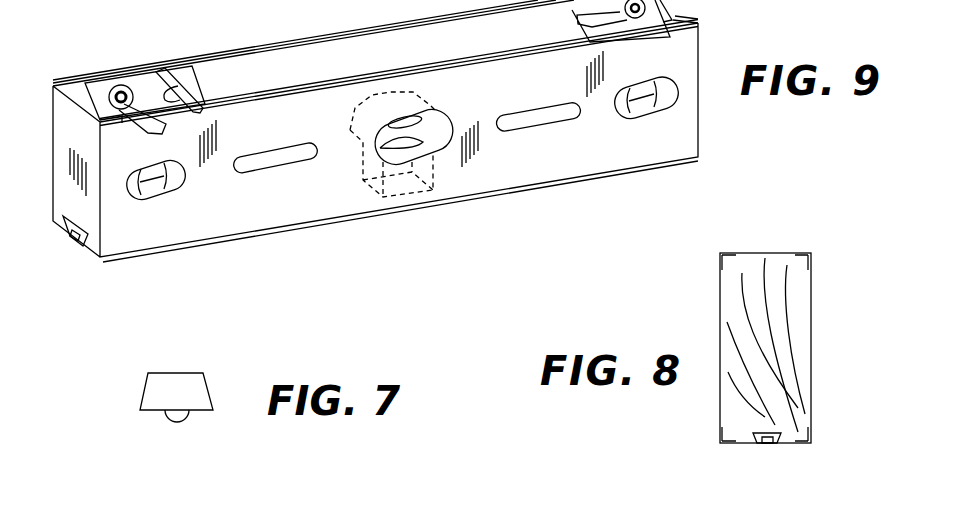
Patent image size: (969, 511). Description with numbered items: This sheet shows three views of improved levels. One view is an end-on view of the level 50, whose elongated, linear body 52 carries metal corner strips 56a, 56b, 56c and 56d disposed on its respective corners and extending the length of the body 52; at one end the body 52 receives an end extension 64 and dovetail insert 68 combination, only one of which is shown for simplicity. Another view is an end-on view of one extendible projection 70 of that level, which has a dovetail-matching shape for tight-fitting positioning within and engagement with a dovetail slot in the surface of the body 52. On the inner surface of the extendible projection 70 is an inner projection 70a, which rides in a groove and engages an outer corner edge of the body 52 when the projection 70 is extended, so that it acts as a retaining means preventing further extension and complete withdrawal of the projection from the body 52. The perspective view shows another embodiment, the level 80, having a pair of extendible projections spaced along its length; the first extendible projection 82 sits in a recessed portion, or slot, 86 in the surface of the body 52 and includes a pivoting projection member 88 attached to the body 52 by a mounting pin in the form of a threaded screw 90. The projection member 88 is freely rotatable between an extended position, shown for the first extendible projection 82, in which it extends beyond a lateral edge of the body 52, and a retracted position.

In FIG. 8, the improved level 50 is at (745, 351).
In FIG. 9, the body 52 is at (221, 214).
In FIG. 8, the body 52 is at (797, 335).
In FIG. 8, the metal corner strip 56a is at (719, 256).
In FIG. 8, the metal corner strip 56b is at (806, 252).
In FIG. 8, the metal corner strip 56c is at (809, 443).
In FIG. 8, the metal corner strip 56d is at (719, 441).
In FIG. 9, the end extension 64 is at (77, 247).
In FIG. 8, the end extension 64 is at (768, 444).
In FIG. 9, the dovetail insert 68 is at (66, 229).
In FIG. 8, the dovetail insert 68 is at (756, 443).
In FIG. 7, the extendible projection 70 is at (142, 412).
In FIG. 7, the inner projection 70a is at (175, 422).
In FIG. 9, the improved level 80 is at (361, 158).
In FIG. 9, the first extendible projection 82 is at (371, 67).
In FIG. 9, the recessed portion or slot 86 is at (172, 78).
In FIG. 9, the pivoting projection member 88 is at (126, 96).
In FIG. 9, the threaded screw 90 is at (117, 95).